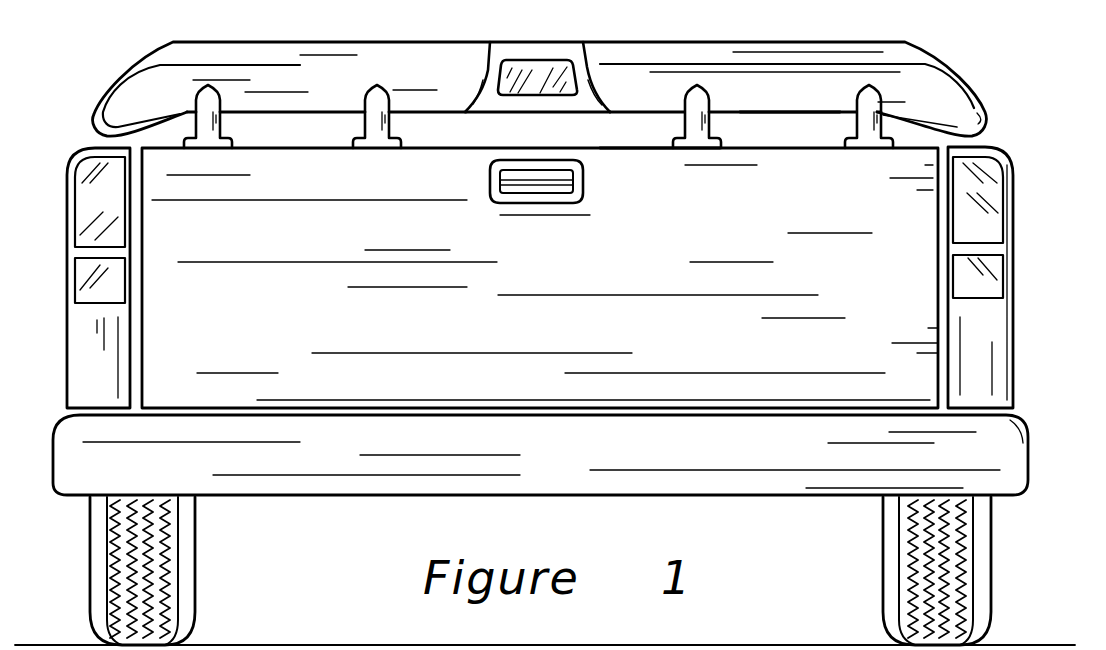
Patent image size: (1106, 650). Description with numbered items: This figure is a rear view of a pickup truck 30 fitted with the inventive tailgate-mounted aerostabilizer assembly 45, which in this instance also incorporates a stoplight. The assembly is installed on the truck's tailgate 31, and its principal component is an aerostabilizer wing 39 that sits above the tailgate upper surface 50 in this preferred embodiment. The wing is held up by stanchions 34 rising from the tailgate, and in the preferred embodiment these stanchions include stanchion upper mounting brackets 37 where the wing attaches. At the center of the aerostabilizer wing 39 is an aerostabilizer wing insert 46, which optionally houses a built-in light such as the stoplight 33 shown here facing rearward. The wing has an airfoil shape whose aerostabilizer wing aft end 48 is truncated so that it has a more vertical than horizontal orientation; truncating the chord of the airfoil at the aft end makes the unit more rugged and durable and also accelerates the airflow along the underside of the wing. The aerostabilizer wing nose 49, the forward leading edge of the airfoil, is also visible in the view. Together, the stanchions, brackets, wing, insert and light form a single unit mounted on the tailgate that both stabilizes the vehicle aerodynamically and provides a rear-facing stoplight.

The pickup truck 30 is at (1013, 378).
The tailgate 31 is at (732, 352).
The stoplight 33 is at (532, 80).
The stanchions 34 is at (362, 117).
The stanchion upper mounting brackets 37 is at (192, 138).
The aerostabilizer wing 39 is at (820, 98).
The aerostabilizer assembly 45 is at (967, 72).
The aerostabilizer wing insert 46 is at (578, 83).
The aerostabilizer wing aft end 48 is at (300, 64).
The aerostabilizer wing nose 49 is at (790, 115).
The tailgate upper surface 50 is at (658, 148).